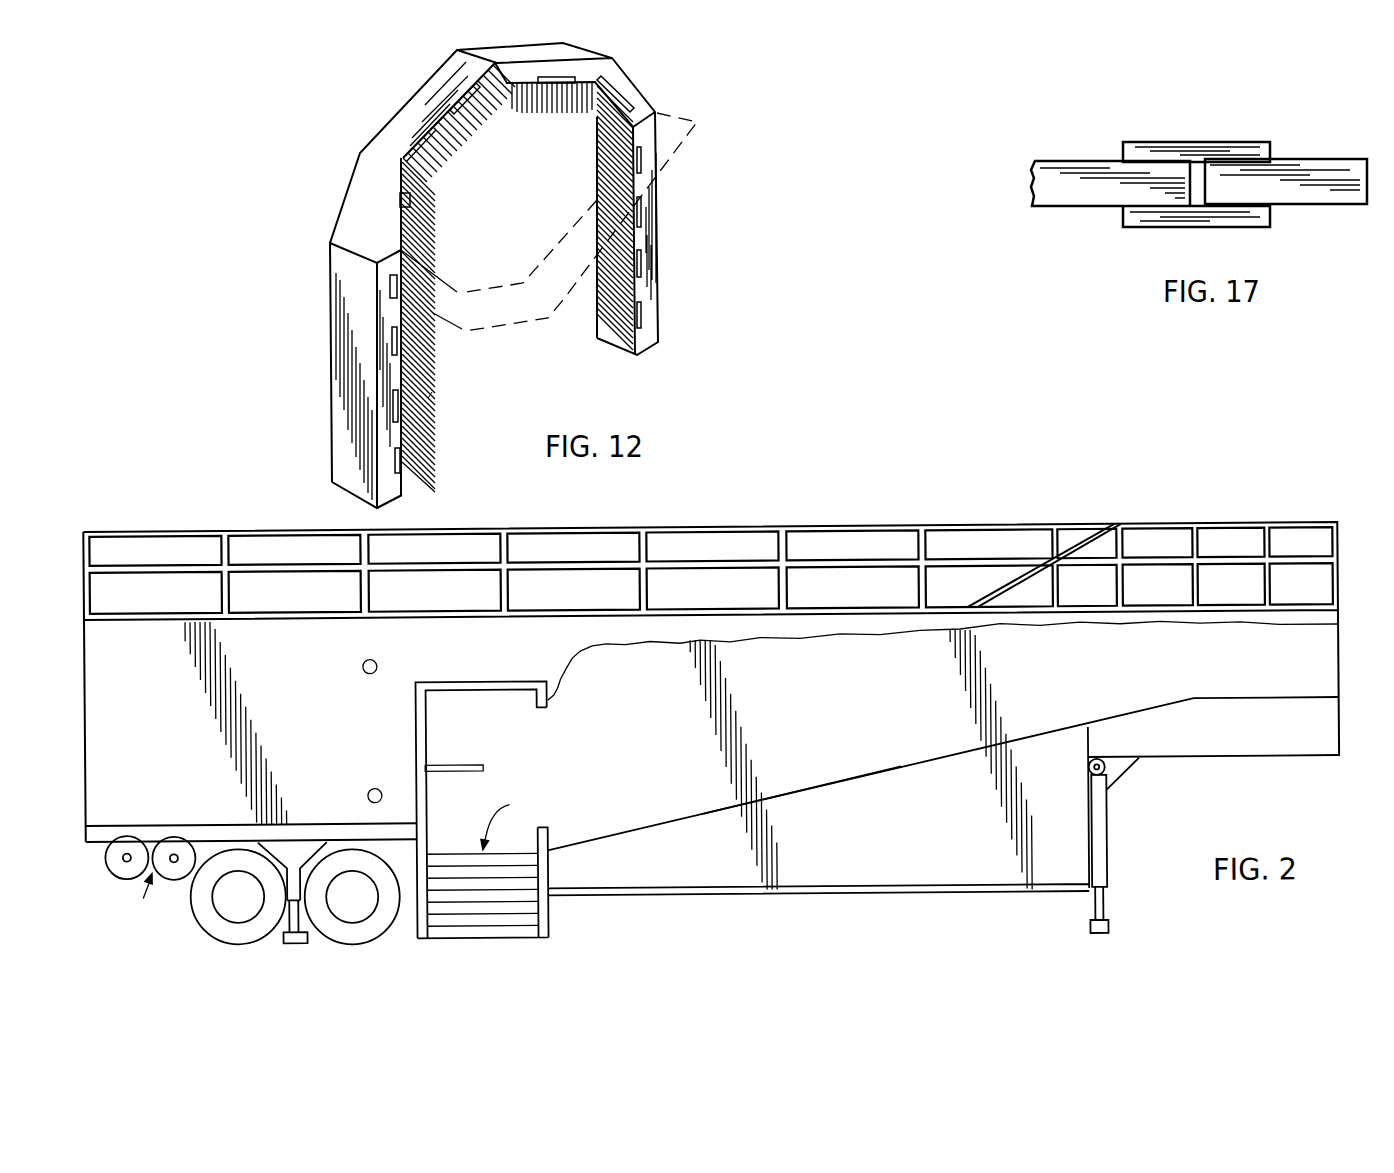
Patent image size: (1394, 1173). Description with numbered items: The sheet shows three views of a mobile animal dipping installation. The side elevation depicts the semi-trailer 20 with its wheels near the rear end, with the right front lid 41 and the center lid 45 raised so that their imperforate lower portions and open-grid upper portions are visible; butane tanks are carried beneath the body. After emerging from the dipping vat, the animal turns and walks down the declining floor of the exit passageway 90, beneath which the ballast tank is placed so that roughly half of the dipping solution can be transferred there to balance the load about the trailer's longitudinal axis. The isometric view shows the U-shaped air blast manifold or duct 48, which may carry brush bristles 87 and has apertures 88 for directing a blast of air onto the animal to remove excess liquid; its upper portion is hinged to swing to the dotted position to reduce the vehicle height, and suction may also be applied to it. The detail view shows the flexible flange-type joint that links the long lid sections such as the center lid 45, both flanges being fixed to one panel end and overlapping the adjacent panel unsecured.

In FIG. 12, the air blast manifold 48 is at (387, 125).
In FIG. 12, the brush bristles 87 is at (428, 398).
In FIG. 12, the apertures 88 is at (440, 213).
In FIG. 2, the semi-trailer 20 is at (1084, 525).
In FIG. 2, the upper side panels 45 is at (913, 527).
In FIG. 2, the lower side panels 41 is at (1227, 527).
In FIG. 2, the floor of passageway 90 is at (822, 796).